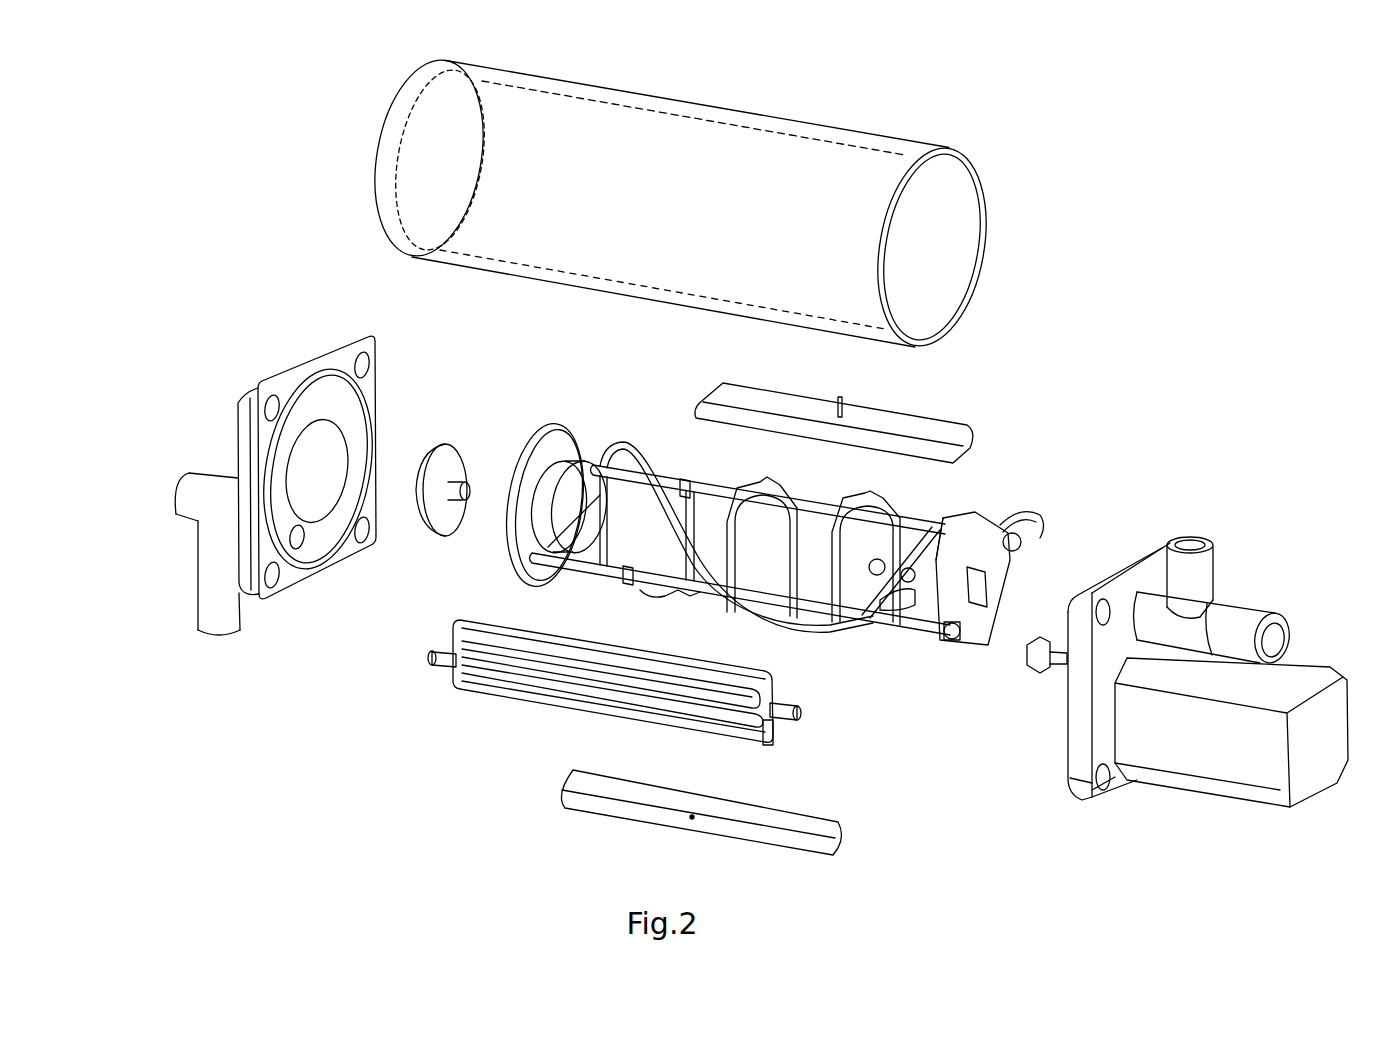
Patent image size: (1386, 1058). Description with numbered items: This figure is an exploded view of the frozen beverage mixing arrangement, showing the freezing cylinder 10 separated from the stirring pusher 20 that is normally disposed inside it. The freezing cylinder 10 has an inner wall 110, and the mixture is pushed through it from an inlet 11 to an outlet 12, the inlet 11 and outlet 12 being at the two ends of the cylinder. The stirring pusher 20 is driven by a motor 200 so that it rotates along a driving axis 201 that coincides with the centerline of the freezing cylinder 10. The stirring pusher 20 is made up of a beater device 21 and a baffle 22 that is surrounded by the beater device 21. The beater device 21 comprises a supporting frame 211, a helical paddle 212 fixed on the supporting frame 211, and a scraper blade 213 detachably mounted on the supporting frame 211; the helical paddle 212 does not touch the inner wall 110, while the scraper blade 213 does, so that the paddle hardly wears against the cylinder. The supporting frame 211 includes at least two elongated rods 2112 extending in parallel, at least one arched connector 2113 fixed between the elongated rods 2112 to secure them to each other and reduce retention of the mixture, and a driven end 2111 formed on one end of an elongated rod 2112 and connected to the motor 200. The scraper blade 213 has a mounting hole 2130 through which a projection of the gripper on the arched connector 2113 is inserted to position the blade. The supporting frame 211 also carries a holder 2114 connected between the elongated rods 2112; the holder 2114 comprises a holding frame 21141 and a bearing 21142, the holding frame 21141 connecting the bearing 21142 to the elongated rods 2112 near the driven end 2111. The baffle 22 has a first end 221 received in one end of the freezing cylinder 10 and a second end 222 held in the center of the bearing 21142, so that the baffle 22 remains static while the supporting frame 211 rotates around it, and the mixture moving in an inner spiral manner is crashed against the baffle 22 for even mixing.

The freezing cylinder 10 is at (800, 123).
The inner wall 110 is at (955, 198).
The outlet 12 is at (210, 583).
The inlet 11 is at (1193, 573).
The motor 200 is at (1200, 743).
The driving axis 201 is at (1058, 672).
The stirring pusher 20 is at (1000, 355).
The beater device 21 is at (990, 727).
The supporting frame 211 is at (950, 643).
The driven end 2111 is at (982, 622).
The elongated rods 2112 is at (543, 540).
The helical paddle 212 is at (627, 440).
The arched connector 2113 is at (773, 487).
The holder 2114 is at (985, 518).
The holding frame 21141 is at (930, 521).
The bearing 21142 is at (885, 617).
The scraper blade 213 is at (930, 427).
The mounting hole 2130 is at (840, 397).
The baffle 22 is at (717, 737).
The first end 221 is at (428, 652).
The second end 222 is at (800, 708).